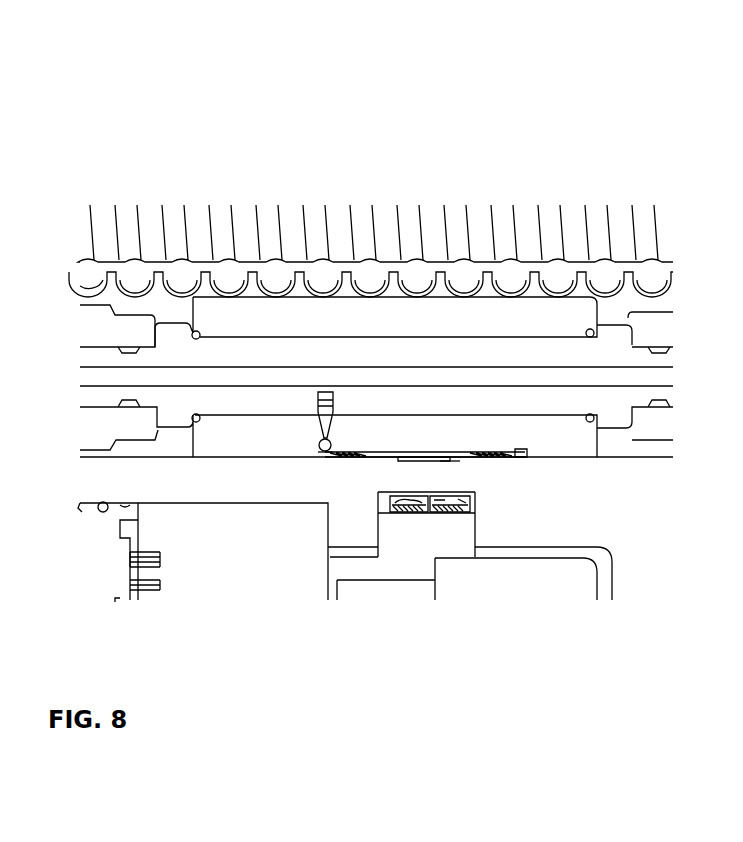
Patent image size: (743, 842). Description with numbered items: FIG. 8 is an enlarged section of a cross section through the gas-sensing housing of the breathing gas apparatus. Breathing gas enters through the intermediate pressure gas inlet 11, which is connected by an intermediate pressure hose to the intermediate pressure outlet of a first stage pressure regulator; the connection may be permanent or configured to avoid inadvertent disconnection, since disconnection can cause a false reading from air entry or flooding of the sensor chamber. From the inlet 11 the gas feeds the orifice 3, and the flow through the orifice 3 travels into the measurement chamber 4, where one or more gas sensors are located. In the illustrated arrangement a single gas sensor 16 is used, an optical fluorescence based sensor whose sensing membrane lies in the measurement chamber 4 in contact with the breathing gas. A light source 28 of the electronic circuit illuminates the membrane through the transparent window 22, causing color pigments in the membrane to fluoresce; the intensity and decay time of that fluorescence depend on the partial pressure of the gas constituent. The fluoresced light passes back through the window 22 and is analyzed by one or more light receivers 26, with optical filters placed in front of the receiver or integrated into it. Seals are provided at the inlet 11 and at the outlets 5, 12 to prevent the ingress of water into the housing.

The orifice 3 is at (325, 396).
The measurement chamber 4 is at (350, 455).
The outlet 5 is at (520, 462).
The intermediate pressure gas inlet 11 is at (175, 352).
The outlet 12 is at (620, 352).
The gas sensor 16 is at (432, 460).
The transparent window 22 is at (451, 481).
The light receiver 26 is at (408, 515).
The light source 28 is at (454, 497).